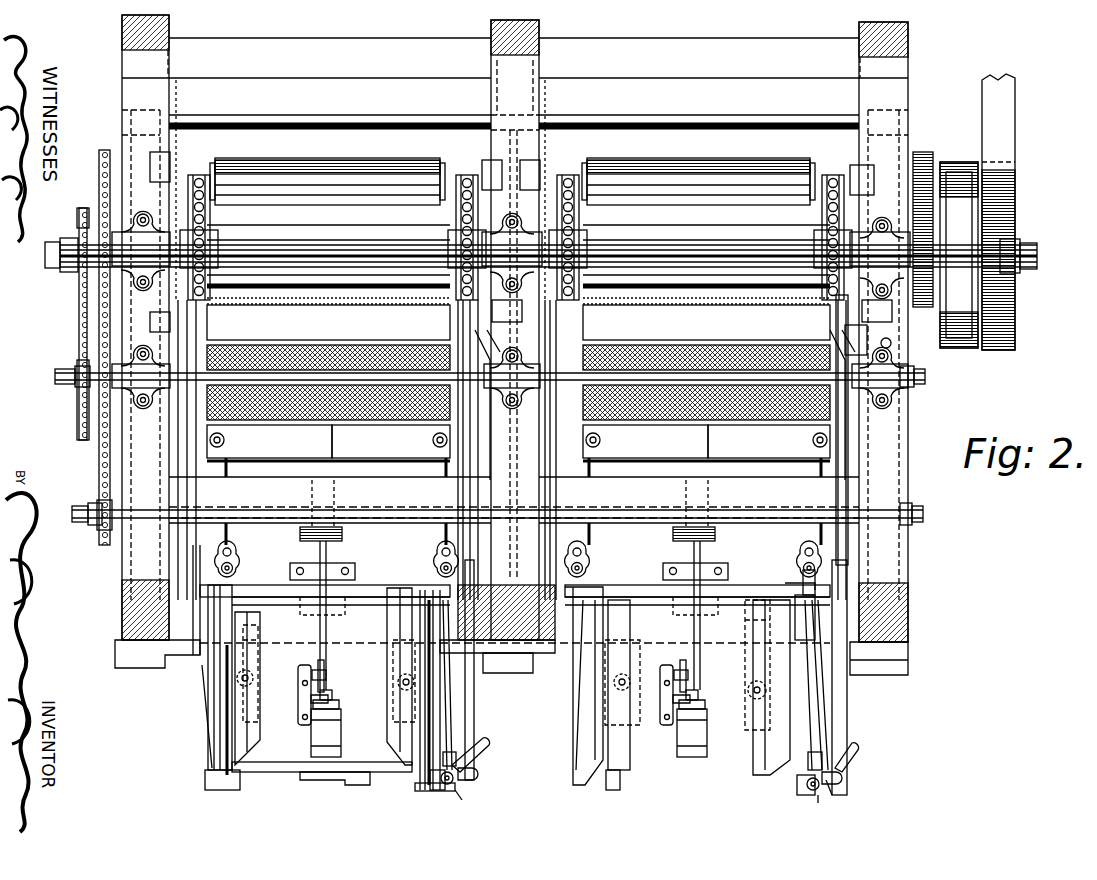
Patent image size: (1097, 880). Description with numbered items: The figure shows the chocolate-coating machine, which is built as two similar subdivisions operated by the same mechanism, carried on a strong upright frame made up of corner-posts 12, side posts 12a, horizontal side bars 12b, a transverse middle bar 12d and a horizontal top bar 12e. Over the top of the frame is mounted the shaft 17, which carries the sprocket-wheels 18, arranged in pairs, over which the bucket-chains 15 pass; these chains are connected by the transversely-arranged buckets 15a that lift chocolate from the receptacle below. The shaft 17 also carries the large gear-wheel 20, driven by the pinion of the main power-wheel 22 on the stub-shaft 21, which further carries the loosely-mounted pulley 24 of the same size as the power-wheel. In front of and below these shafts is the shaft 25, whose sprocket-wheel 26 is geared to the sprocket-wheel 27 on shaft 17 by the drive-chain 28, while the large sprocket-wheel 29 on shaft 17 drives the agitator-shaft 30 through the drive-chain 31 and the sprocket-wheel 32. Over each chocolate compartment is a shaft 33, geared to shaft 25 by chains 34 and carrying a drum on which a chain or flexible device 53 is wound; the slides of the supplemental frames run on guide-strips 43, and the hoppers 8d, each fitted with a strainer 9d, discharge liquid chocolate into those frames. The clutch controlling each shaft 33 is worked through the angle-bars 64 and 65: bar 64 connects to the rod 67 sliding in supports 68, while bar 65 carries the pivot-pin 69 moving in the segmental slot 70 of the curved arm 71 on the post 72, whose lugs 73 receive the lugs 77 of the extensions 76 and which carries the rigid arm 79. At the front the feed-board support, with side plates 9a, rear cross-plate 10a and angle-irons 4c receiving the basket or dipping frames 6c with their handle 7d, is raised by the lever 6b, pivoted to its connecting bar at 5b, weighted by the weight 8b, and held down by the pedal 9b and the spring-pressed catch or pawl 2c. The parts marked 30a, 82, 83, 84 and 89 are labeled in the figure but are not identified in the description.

The corner-posts 12 is at (170, 27).
The side posts 12a is at (540, 29).
The horizontal side bars 12b is at (510, 441).
The transverse middle bar 12d is at (509, 545).
The horizontal top bar 12e is at (720, 670).
The chain or other flexible device 53 is at (177, 98).
The buckets 15a is at (340, 160).
The bucket-chains 15 is at (212, 226).
The shaft 17 is at (696, 248).
The sprocket-wheels 18 is at (198, 174).
The large gear-wheel 20 is at (925, 151).
The stub-shaft 21 is at (45, 255).
The main power-wheel 22 is at (959, 255).
The loosely-mounted pulley 24 is at (1016, 182).
The shaft 25 is at (57, 380).
The sprocket-wheel 26 is at (78, 410).
The sprocket-wheel 27 is at (78, 222).
The drive-chain 28 is at (78, 310).
The large sprocket-wheel 29 is at (99, 170).
The agitator-shaft 30 is at (80, 520).
The connecting rod 30a is at (850, 790).
The drive-chain 31 is at (98, 440).
The sprocket-wheel 32 is at (102, 535).
The shaft 33 is at (170, 306).
The chains 34 is at (870, 338).
The angle-bar 64 is at (479, 460).
The angle-bar 65 is at (482, 420).
The bolt or rod 67 is at (803, 585).
The supports 68 is at (795, 600).
The pivot-pin 69 is at (836, 792).
The segmental slot 70 is at (454, 778).
The curved arm 71 is at (474, 772).
The post 72 is at (449, 752).
The parallel lugs or projections 73 is at (440, 790).
The upwardly-directed extensions 76 is at (803, 797).
The lugs or projections 77 is at (640, 806).
The arm 79 is at (492, 746).
The hanger rod 82 is at (820, 464).
The hanger bracket 83 is at (800, 552).
The hanger pivot 84 is at (800, 566).
The support plate 89 is at (366, 585).
The hoppers 8d is at (518, 379).
The strainer 9d is at (581, 441).
The weight 8b is at (305, 538).
The lever 6b is at (330, 549).
The rear cross-plate 10a is at (310, 606).
The basket or dipping frames 6c is at (348, 610).
The angle-irons 4c is at (258, 742).
The side plates 9a is at (258, 692).
The pivot 5b is at (330, 688).
The catch or pawl 2c is at (300, 705).
The pedal 9b is at (342, 740).
The handle 7d is at (322, 786).
The guide-strip 43 is at (618, 695).